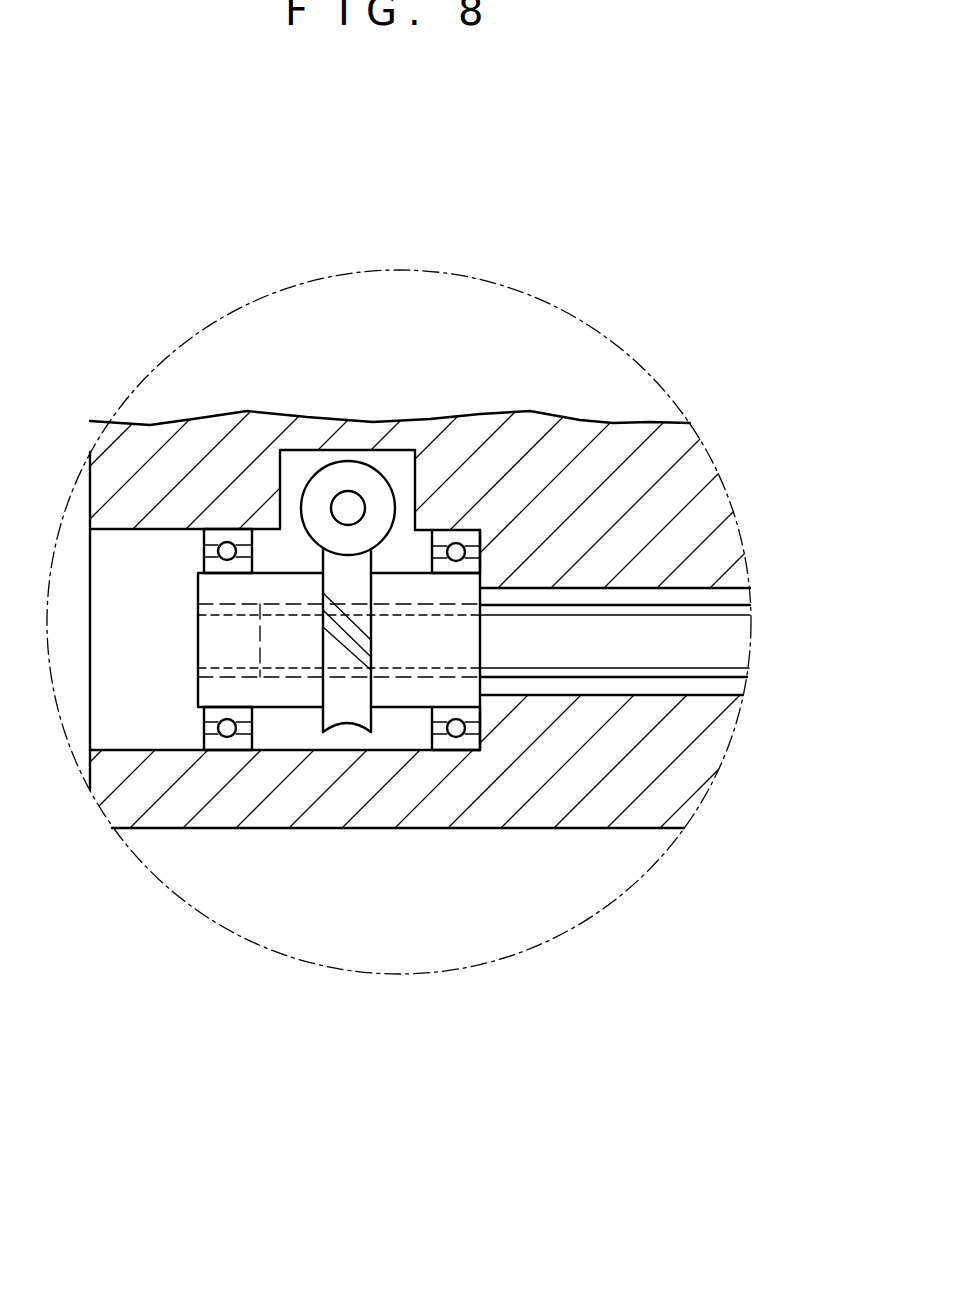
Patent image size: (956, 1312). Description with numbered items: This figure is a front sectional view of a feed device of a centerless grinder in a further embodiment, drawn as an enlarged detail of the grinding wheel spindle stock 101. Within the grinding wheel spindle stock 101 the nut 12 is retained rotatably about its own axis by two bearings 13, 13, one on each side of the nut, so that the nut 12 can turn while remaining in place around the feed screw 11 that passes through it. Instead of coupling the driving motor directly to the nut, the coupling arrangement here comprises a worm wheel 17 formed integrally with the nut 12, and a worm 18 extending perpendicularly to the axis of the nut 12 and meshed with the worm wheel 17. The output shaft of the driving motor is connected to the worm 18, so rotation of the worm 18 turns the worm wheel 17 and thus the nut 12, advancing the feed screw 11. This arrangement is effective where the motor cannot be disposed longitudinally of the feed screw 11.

The grinding wheel spindle stock 101 is at (185, 350).
The feed screw 11 is at (742, 642).
The nut 12 is at (287, 697).
The bearing 13 is at (229, 743).
The worm wheel 17 is at (347, 715).
The worm 18 is at (343, 472).